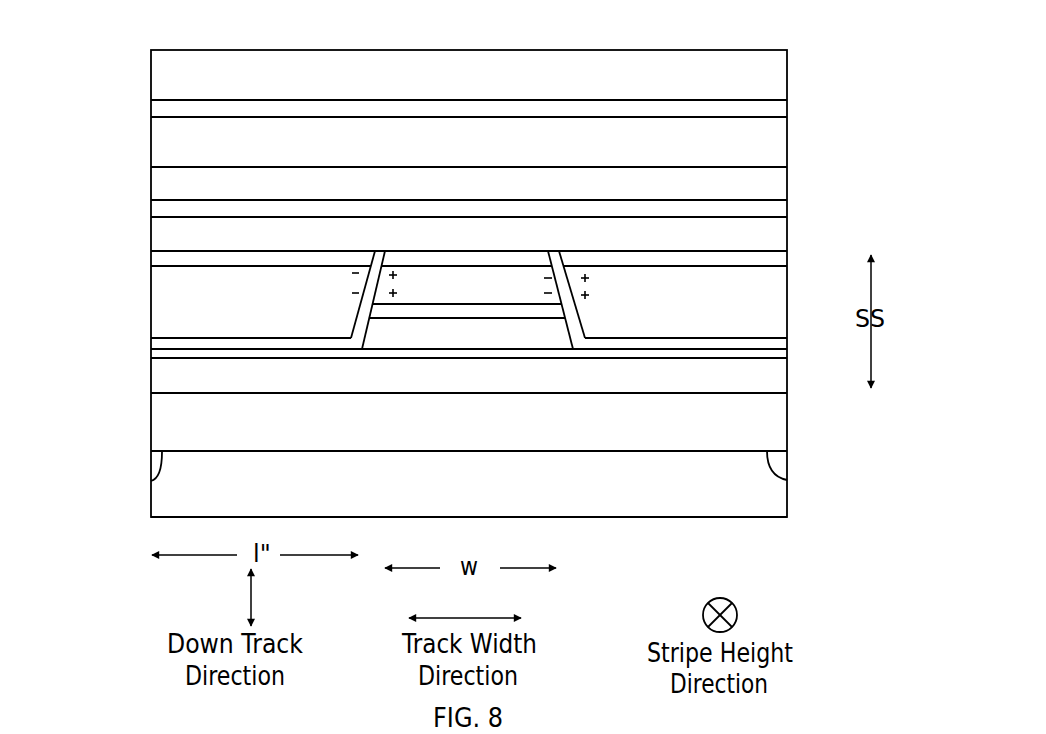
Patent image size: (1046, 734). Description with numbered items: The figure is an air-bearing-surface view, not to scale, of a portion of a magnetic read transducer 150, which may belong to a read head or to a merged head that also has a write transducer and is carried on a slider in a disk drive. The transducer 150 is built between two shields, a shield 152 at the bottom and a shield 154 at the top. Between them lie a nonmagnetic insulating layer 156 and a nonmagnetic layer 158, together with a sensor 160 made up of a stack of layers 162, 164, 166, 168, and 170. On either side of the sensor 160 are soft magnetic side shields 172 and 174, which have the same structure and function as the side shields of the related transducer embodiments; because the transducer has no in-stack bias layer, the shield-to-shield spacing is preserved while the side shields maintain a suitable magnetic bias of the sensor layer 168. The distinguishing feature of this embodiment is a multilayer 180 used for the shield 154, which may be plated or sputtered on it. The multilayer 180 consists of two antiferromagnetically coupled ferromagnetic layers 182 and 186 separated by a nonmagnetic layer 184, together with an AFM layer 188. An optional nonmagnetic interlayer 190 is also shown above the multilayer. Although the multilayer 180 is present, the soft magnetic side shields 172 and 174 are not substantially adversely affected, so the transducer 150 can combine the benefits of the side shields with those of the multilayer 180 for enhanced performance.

The magnetic read transducer 150 is at (135, 43).
The shield 152 is at (787, 487).
The shield 154 is at (838, 67).
The nonmagnetic insulating layer 156 is at (151, 481).
The nonmagnetic layer 158 is at (151, 262).
The sensor 160 is at (528, 472).
The sensor layer 162 is at (371, 452).
The sensor layer 164 is at (552, 417).
The sensor layer 166 is at (585, 312).
The sensor layer 168 is at (402, 251).
The sensor layer 170 is at (510, 251).
The soft magnetic side shield 172 is at (828, 302).
The soft magnetic side shield 174 is at (151, 327).
The multilayer 180 is at (444, 156).
The ferromagnetic layer 182 is at (150, 242).
The nonmagnetic layer 184 is at (150, 207).
The ferromagnetic layer 186 is at (787, 183).
The AFM layer 188 is at (787, 132).
The nonmagnetic interlayer 190 is at (150, 108).